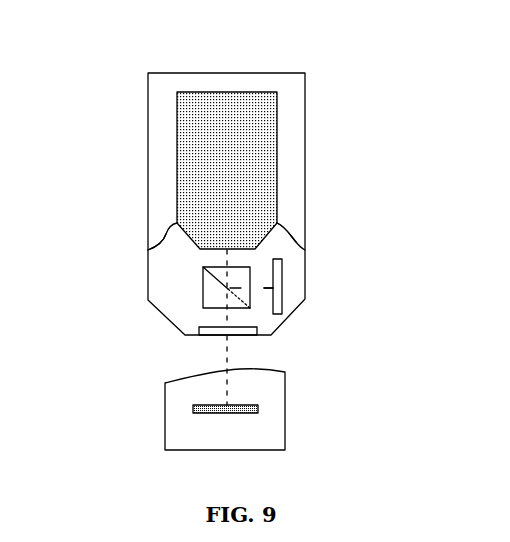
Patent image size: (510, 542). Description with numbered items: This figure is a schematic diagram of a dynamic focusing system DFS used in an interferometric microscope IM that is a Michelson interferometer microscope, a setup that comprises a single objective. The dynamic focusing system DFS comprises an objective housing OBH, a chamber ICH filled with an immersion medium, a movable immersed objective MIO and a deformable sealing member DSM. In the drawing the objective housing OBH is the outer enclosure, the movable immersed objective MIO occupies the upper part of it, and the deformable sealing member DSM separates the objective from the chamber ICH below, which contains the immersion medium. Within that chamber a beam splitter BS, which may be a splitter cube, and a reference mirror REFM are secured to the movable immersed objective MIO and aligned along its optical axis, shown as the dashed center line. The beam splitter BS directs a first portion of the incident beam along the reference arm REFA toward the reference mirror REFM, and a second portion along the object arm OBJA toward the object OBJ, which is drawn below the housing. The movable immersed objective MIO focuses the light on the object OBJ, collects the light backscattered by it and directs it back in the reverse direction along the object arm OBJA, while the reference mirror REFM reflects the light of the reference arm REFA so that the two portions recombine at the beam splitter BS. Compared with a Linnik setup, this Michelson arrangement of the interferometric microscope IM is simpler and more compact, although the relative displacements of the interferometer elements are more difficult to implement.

The interferometric microscope IM is at (267, 58).
The objective housing OBH is at (305, 133).
The dynamic focusing system DFS is at (329, 199).
The movable immersed objective MIO is at (177, 118).
The deformable sealing member DSM is at (299, 243).
The chamber ICH is at (148, 270).
The beam splitter BS is at (203, 288).
The reference mirror REFM is at (284, 276).
The reference arm REFA is at (263, 294).
The object arm OBJA is at (222, 315).
The object OBJ is at (165, 407).